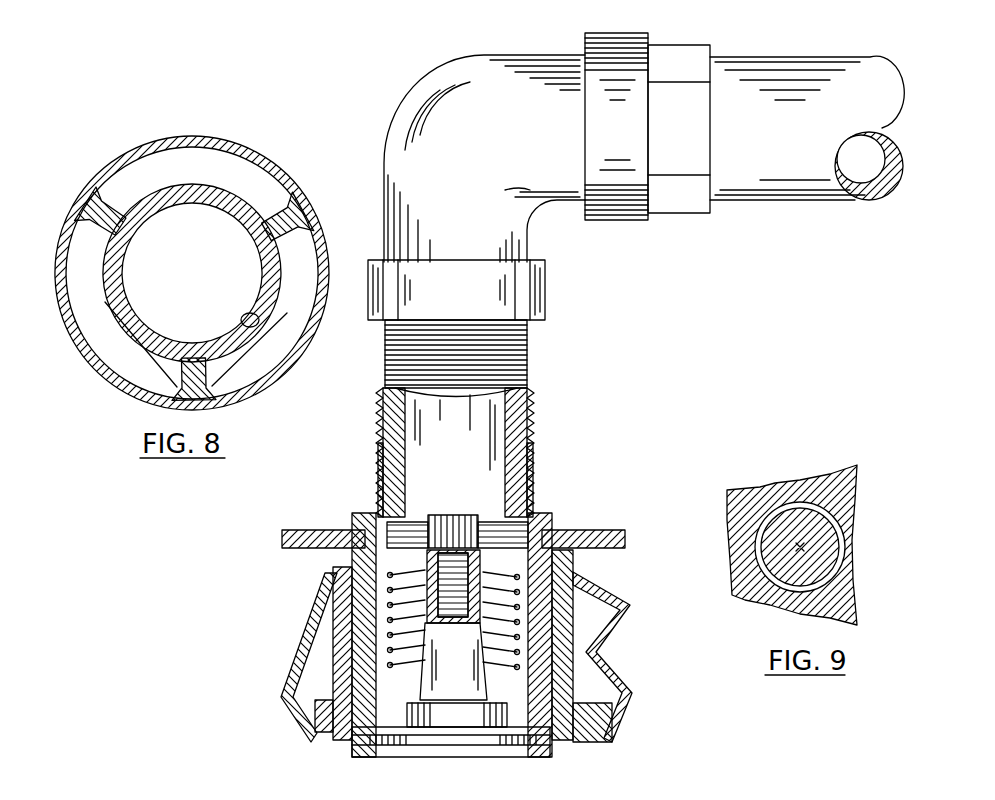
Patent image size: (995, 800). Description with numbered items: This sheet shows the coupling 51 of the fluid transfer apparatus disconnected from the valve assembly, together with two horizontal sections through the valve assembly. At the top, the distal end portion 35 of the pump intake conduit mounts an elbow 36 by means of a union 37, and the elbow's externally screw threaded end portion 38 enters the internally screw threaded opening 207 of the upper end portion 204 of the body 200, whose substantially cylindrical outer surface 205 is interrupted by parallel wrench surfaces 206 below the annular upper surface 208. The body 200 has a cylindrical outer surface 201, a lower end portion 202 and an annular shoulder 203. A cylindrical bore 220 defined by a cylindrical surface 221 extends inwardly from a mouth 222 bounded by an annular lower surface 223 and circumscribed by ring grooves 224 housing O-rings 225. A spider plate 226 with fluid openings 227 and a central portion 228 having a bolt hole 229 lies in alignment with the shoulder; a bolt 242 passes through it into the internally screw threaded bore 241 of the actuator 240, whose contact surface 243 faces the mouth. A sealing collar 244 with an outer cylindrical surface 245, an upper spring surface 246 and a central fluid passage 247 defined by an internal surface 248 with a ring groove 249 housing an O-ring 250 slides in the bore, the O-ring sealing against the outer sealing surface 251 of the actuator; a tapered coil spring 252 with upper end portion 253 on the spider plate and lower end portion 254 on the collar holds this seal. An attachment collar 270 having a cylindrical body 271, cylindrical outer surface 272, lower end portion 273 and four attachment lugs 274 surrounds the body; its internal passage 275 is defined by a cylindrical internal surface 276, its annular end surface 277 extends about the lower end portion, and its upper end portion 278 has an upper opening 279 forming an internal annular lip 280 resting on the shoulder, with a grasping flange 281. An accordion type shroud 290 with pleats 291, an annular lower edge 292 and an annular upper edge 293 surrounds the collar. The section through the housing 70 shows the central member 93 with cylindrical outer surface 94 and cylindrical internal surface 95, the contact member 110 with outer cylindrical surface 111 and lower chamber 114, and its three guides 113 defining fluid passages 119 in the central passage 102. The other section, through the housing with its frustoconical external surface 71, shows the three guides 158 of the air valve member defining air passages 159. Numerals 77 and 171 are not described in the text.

In FIG. 8, the cylindrical outer surface 94 is at (212, 137).
In FIG. 8, the central member 93 is at (246, 150).
In FIG. 8, the cylindrical internal surface 95 is at (268, 162).
In FIG. 8, the guides 113 is at (108, 175).
In FIG. 8, the fluid passages 119 is at (152, 175).
In FIG. 8, the outer cylindrical surface 111 is at (72, 338).
In FIG. 8, the lower chamber 114 is at (258, 328).
In FIG. 8, the contact member 110 is at (120, 355).
In FIG. 4, the elbow 36 is at (430, 70).
In FIG. 4, the union 37 is at (690, 45).
In FIG. 4, the distal end portion 35 is at (780, 60).
In FIG. 4, the externally screw threaded end portion 38 is at (530, 348).
In FIG. 4, the wrench surfaces 206 is at (380, 438).
In FIG. 4, the internally screw threaded opening 207 is at (530, 425).
In FIG. 4, the annular upper surface 208 is at (535, 445).
In FIG. 4, the upper end portion 204 is at (535, 460).
In FIG. 4, the spider plate 226 is at (540, 516).
In FIG. 4, the annular shoulder 203 is at (590, 530).
In FIG. 4, the attachment collar 270 is at (621, 523).
In FIG. 4, the fluid openings 227 is at (440, 520).
In FIG. 4, the bolt 242 is at (466, 530).
In FIG. 4, the internally screw threaded bore 241 is at (445, 520).
In FIG. 4, the substantially cylindrical outer surface 205 is at (370, 520).
In FIG. 4, the upper opening 279 is at (360, 525).
In FIG. 4, the annular upper edge 293 is at (310, 531).
In FIG. 4, the grasping flange 281 is at (280, 540).
In FIG. 4, the internal annular lip 280 is at (345, 557).
In FIG. 4, the central portion 228 is at (330, 575).
In FIG. 4, the cylindrical body 271 is at (300, 593).
In FIG. 4, the cylindrical outer surface 272 is at (302, 611).
In FIG. 4, the coupling 51 is at (240, 627).
In FIG. 4, the cylindrical bore 220 is at (360, 620).
In FIG. 4, the cylindrical surface 221 is at (355, 640).
In FIG. 4, the internal passage 275 is at (340, 650).
In FIG. 4, the lower end portion 254 is at (335, 665).
In FIG. 4, the lower end portion 273 is at (300, 698).
In FIG. 4, the attachment lugs 274 is at (318, 712).
In FIG. 4, the annular lower edge 292 is at (305, 740).
In FIG. 4, the bolt hole 229 is at (415, 586).
In FIG. 4, the outer sealing surface 251 is at (420, 690).
In FIG. 4, the actuator 240 is at (470, 665).
In FIG. 4, the O-ring 250 is at (457, 676).
In FIG. 4, the ring groove 249 is at (490, 712).
In FIG. 4, the upper end portion 253 is at (495, 574).
In FIG. 4, the tapered coil spring 252 is at (490, 598).
In FIG. 4, the central fluid passage 247 is at (495, 630).
In FIG. 4, the upper spring surface 246 is at (500, 680).
In FIG. 4, the upper end portion 278 is at (580, 558).
In FIG. 4, the cylindrical internal surface 276 is at (585, 575).
In FIG. 4, the pleats 291 is at (620, 596).
In FIG. 4, the body 200 is at (590, 610).
In FIG. 4, the cylindrical outer surface 201 is at (590, 625).
In FIG. 4, the accordion type shroud 290 is at (595, 650).
In FIG. 4, the sealing collar 244 is at (580, 670).
In FIG. 4, the outer cylindrical surface 245 is at (580, 683).
In FIG. 4, the O-rings 225 is at (600, 706).
In FIG. 4, the lower end portion 202 is at (605, 735).
In FIG. 4, the annular end surface 277 is at (565, 745).
In FIG. 4, the annular lower surface 223 is at (545, 758).
In FIG. 4, the ring grooves 224 is at (375, 752).
In FIG. 4, the internal surface 248 is at (420, 737).
In FIG. 4, the mouth 222 is at (475, 760).
In FIG. 4, the contact surface 243 is at (495, 737).
In FIG. 4, the outlet 77 is at (340, 799).
In FIG. 4, the outlet 171 is at (299, 795).
In FIG. 9, the housing 70 is at (853, 500).
In FIG. 9, the frustoconical external surface 71 is at (870, 520).
In FIG. 9, the central passage 102 is at (740, 550).
In FIG. 9, the guides 158 is at (782, 505).
In FIG. 9, the air passages 159 is at (815, 498).